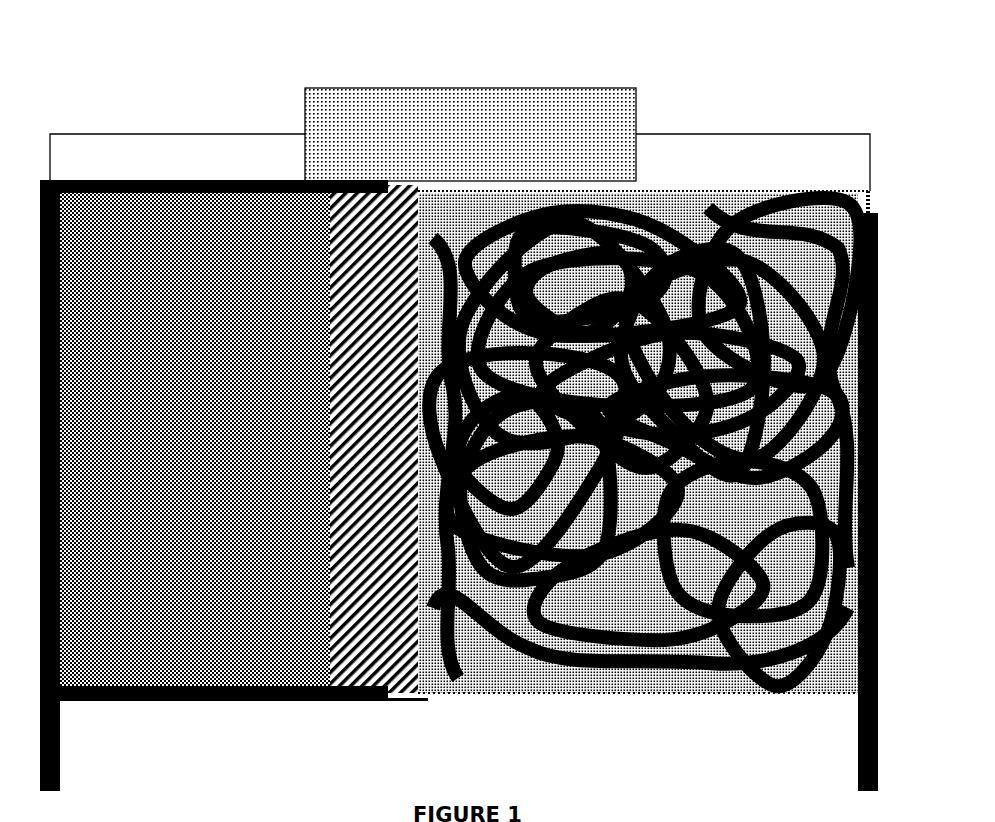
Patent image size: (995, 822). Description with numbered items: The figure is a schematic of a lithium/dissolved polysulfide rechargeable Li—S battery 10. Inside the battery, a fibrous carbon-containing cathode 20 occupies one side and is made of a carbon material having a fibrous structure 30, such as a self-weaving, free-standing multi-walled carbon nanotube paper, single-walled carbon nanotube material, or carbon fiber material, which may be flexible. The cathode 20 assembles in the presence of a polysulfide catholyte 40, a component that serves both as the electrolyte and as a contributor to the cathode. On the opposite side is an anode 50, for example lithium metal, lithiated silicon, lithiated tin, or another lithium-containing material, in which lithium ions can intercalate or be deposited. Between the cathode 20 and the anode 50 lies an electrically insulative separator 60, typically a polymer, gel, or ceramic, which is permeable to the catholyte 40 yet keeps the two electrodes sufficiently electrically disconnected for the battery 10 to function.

The Li/polysulfide rechargeable Li—S battery 10 is at (188, 88).
The fibrous carbon-containing cathode 20 is at (848, 693).
The fibrous structure 30 is at (707, 193).
The polysulfide catholyte 40 is at (835, 170).
The anode 50 is at (138, 695).
The electrically insulative separator 60 is at (338, 695).